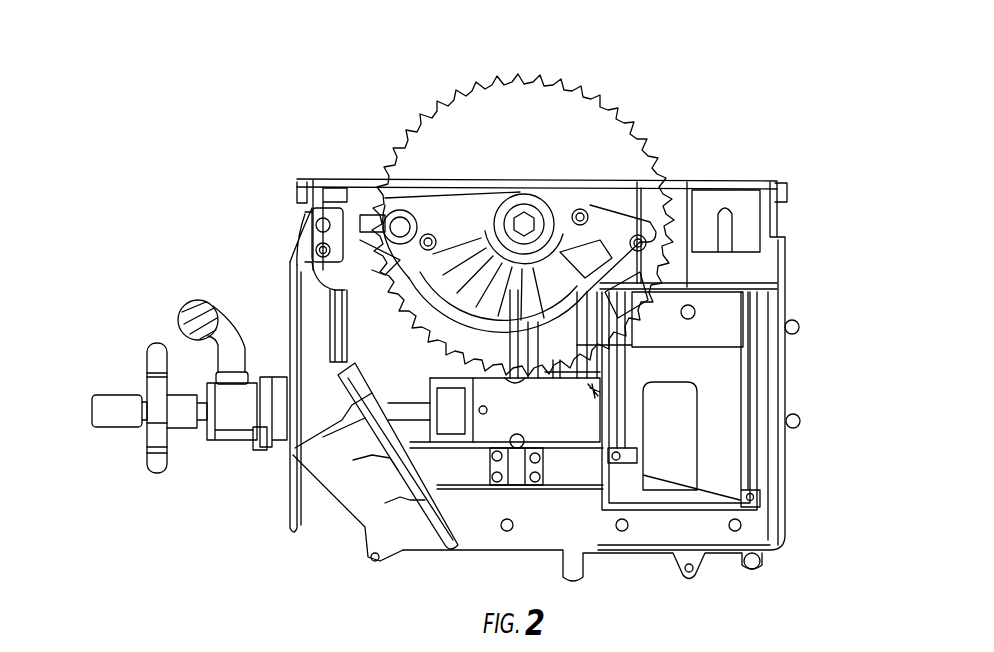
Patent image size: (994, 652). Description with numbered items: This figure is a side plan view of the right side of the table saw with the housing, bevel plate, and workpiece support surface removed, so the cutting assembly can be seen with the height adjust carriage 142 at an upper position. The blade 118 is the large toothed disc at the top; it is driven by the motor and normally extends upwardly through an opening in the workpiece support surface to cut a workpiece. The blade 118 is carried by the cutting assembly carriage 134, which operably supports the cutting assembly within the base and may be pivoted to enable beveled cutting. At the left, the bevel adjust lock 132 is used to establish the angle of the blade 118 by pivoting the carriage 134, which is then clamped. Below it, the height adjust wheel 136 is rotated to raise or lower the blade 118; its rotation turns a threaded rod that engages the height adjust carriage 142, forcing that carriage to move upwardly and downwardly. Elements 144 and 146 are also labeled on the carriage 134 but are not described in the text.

The blade 118 is at (635, 127).
The bevel adjust lock 132 is at (232, 310).
The carriage 134 is at (762, 560).
The height adjust wheel 136 is at (152, 466).
The height adjust carriage 142 is at (413, 190).
The mounting plate 144 is at (295, 262).
The support bar 146 is at (583, 352).